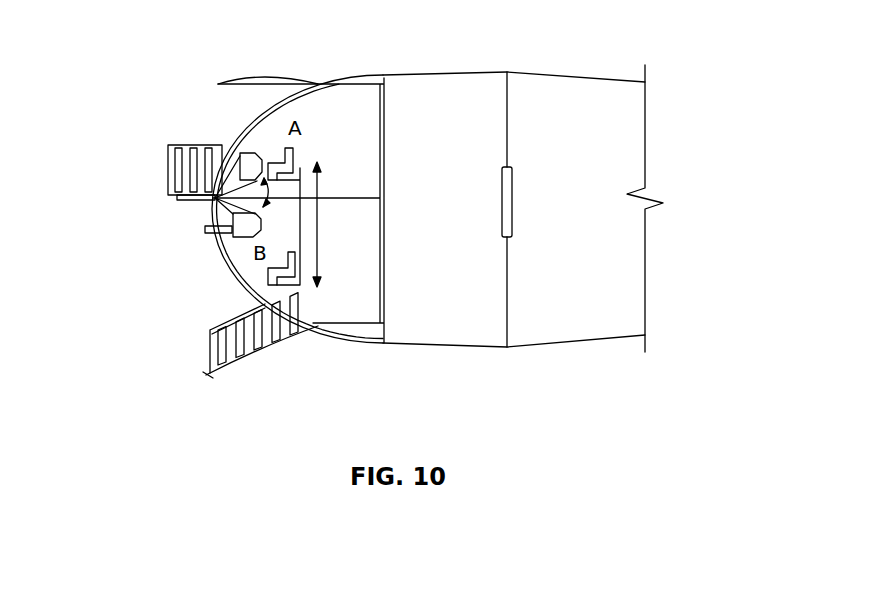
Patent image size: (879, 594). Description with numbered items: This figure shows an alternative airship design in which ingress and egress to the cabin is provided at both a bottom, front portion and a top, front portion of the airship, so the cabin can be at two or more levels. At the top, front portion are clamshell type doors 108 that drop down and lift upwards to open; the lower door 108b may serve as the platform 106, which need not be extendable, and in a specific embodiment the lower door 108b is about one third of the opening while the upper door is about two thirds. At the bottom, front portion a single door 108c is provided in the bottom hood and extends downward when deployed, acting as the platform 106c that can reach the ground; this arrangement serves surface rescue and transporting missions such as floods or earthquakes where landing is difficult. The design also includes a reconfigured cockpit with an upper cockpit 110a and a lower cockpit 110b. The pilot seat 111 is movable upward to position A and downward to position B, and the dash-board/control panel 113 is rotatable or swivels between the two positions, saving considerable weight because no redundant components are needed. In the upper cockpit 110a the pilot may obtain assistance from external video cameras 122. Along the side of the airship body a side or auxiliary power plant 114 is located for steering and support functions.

The door 108 is at (238, 77).
The upper cockpit 110a is at (307, 145).
The lower cockpit 110b is at (305, 290).
The pilot seat 111 is at (287, 148).
The dash-board/control panel 113 is at (240, 153).
The lower door 108b is at (168, 187).
The platform 106 is at (127, 182).
The door 108c is at (207, 373).
The platform 106c is at (189, 349).
The auxiliary power plant 114 is at (508, 208).
The external video cameras 122 is at (208, 233).